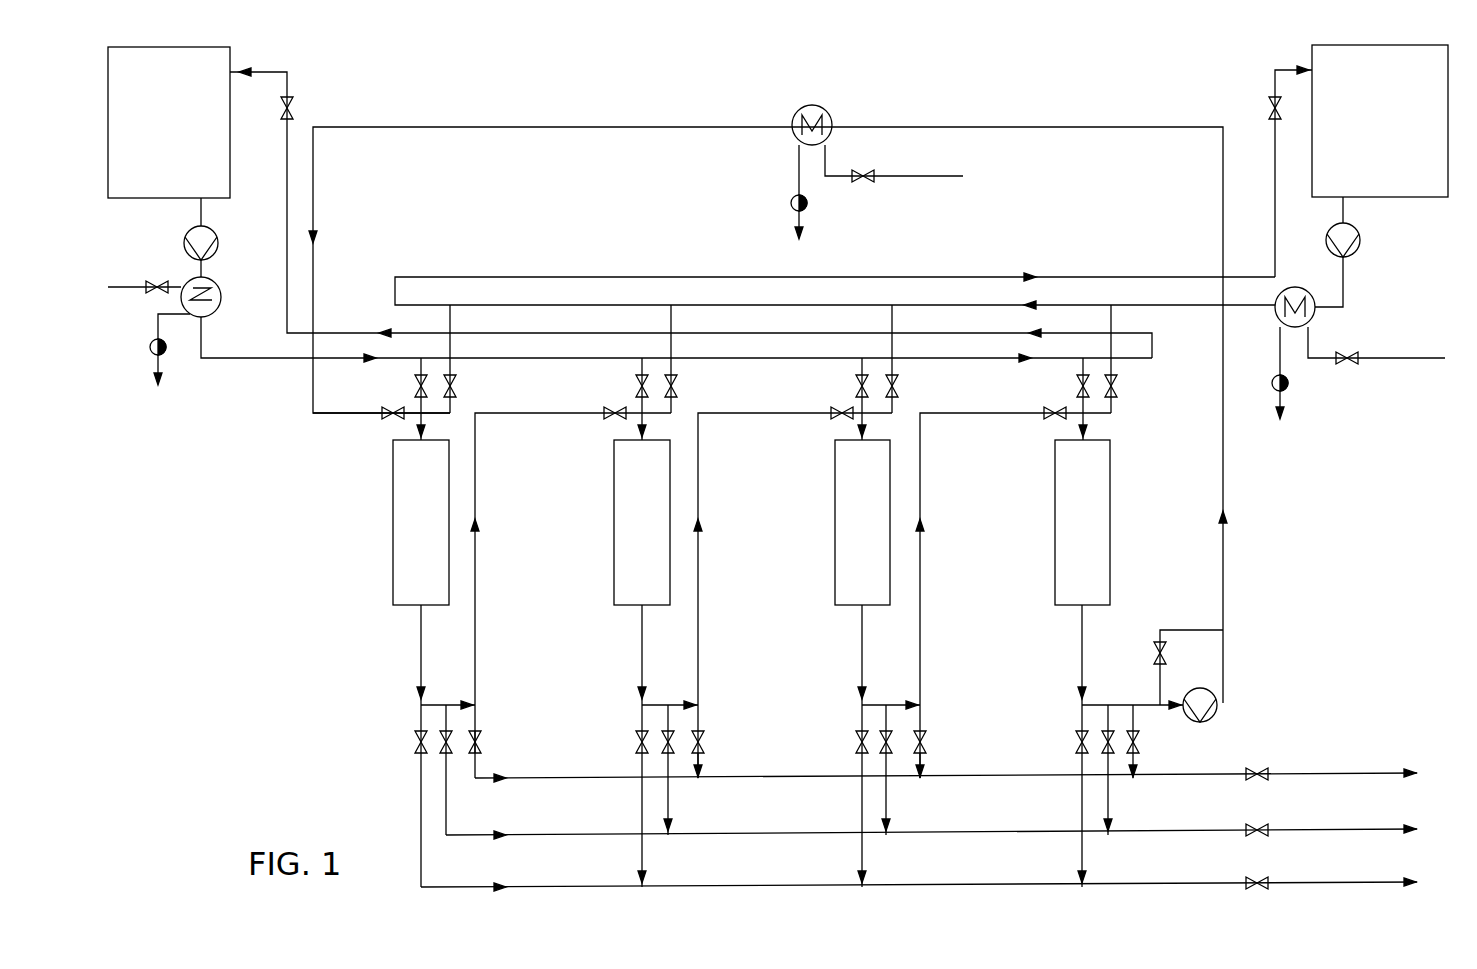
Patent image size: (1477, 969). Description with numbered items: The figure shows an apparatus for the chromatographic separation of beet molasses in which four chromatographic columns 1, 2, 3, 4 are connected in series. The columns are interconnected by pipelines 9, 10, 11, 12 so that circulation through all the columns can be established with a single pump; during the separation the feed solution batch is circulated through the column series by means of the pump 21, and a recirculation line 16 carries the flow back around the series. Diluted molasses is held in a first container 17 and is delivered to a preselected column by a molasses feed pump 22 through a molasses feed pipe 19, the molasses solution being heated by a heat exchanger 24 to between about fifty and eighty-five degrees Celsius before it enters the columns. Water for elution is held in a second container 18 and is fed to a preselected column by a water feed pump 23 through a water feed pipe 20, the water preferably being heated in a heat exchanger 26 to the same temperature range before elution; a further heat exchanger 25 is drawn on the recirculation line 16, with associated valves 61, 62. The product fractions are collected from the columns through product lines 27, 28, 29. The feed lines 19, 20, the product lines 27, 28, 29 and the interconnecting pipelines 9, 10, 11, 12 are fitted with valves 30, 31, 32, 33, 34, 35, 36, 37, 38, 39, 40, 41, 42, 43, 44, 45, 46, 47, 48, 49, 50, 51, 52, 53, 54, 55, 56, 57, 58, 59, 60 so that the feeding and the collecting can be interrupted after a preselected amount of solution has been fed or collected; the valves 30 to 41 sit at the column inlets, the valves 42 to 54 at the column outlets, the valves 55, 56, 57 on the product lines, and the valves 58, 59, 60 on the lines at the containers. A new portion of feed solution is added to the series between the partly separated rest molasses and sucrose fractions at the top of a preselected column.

The chromatographic column 1 is at (393, 519).
The chromatographic column 2 is at (614, 519).
The chromatographic column 3 is at (835, 519).
The chromatographic column 4 is at (1055, 519).
The interconnecting pipeline 9 is at (475, 628).
The interconnecting pipeline 10 is at (698, 628).
The interconnecting pipeline 11 is at (920, 620).
The interconnecting pipeline 12 is at (1082, 622).
The recirculation line 16 is at (458, 127).
The first container 17 is at (230, 160).
The second container 18 is at (1418, 197).
The molasses feed pipe 19 is at (201, 343).
The water feed pipe 20 is at (1343, 285).
The pump 21 is at (1217, 700).
The molasses feed pump 22 is at (216, 232).
The water feed pump 23 is at (1360, 237).
The heat exchanger 24 is at (218, 290).
The heat exchanger 25 is at (828, 112).
The heat exchanger 26 is at (1305, 290).
The product line 27 is at (1192, 775).
The product line 28 is at (1190, 831).
The product line 29 is at (1180, 884).
The valve 30 is at (388, 418).
The valve 31 is at (413, 388).
The valve 32 is at (457, 388).
The valve 33 is at (610, 418).
The valve 34 is at (634, 388).
The valve 35 is at (678, 388).
The valve 36 is at (837, 418).
The valve 37 is at (854, 388).
The valve 38 is at (899, 388).
The valve 39 is at (1050, 418).
The valve 40 is at (1075, 388).
The valve 41 is at (1118, 388).
The valve 42 is at (413, 742).
The valve 43 is at (441, 750).
The valve 44 is at (482, 745).
The valve 45 is at (634, 743).
The valve 46 is at (661, 738).
The valve 47 is at (705, 745).
The valve 48 is at (854, 743).
The valve 49 is at (879, 738).
The valve 50 is at (927, 745).
The valve 51 is at (1074, 743).
The valve 52 is at (1101, 738).
The valve 53 is at (1140, 745).
The valve 54 is at (1153, 658).
The valve 55 is at (1260, 782).
The valve 56 is at (1260, 838).
The valve 57 is at (1260, 891).
The valve 58 is at (1268, 105).
The valve 59 is at (295, 111).
The valve 60 is at (150, 290).
The valve 61 is at (866, 184).
The valve 62 is at (1349, 368).